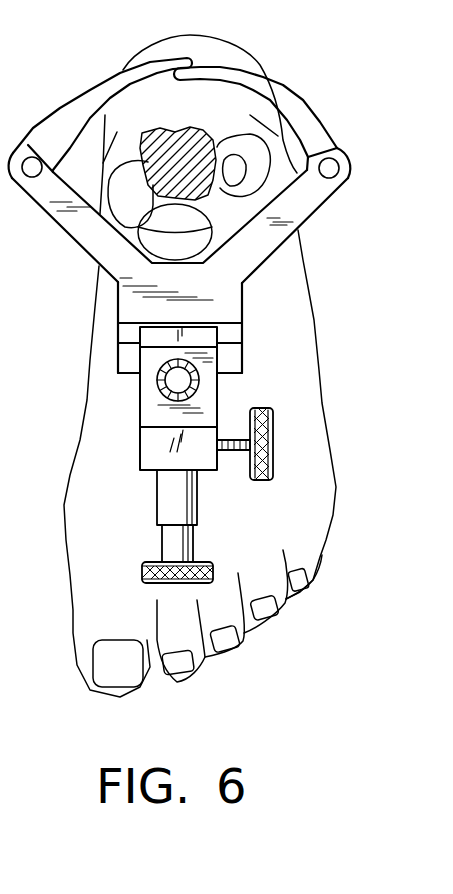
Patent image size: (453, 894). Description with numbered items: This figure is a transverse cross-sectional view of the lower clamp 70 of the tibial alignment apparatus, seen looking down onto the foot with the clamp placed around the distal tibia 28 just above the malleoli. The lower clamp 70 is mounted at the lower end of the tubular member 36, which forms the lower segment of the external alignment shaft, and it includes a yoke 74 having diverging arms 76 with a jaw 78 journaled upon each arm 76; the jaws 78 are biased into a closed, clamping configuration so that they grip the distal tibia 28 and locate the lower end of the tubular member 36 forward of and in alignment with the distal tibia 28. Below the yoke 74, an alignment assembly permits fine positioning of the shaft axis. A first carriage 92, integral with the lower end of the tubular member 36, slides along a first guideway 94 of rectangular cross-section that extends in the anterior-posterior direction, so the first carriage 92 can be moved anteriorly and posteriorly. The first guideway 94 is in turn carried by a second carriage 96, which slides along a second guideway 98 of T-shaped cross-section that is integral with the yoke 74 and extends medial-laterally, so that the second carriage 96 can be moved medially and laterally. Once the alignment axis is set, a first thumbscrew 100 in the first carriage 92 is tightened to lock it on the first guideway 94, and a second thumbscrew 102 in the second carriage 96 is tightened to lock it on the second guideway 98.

The distal tibia 28 is at (213, 140).
The jaw 78 is at (75, 112).
The diverging arms 76 is at (63, 210).
The yoke 74 is at (228, 298).
The lower clamp 70 is at (255, 327).
The second carriage 96 is at (140, 335).
The second guideway 98 is at (132, 361).
The first carriage 92 is at (155, 452).
The tubular member 36 is at (162, 397).
The first guideway 94 is at (162, 503).
The first thumbscrew 100 is at (273, 423).
The second thumbscrew 102 is at (145, 583).